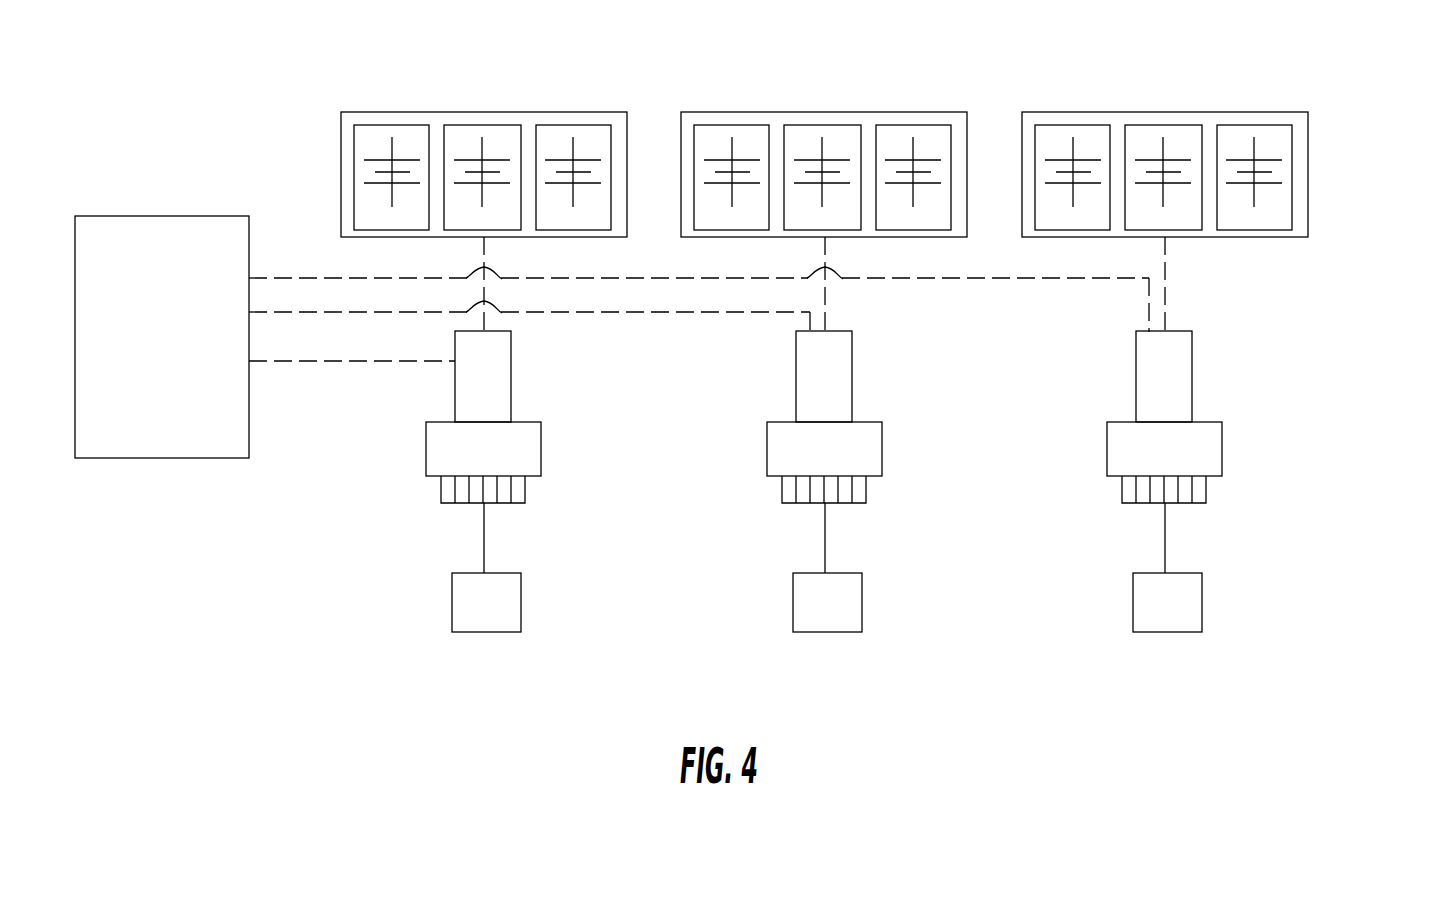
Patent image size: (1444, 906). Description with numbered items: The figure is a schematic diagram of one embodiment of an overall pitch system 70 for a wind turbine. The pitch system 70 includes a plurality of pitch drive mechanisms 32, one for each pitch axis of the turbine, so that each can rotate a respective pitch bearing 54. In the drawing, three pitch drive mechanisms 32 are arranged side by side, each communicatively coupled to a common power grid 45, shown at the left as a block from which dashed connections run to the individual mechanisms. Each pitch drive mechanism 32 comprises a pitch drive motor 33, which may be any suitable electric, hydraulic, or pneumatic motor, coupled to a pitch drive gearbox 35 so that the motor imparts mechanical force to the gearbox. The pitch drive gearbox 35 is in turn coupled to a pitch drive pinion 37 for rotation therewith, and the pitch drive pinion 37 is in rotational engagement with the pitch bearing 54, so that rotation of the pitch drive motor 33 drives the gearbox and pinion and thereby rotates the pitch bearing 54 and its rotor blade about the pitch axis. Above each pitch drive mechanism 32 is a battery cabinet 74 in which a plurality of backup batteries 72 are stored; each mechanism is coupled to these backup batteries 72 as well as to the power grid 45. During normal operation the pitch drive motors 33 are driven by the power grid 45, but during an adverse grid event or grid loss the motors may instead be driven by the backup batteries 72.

The pitch system 70 is at (1382, 168).
The backup battery 72 is at (459, 137).
The battery cabinet 74 is at (495, 112).
The power grid 45 is at (152, 382).
The pitch drive mechanism 32 is at (840, 425).
The pitch drive motor 33 is at (455, 377).
The pitch drive gearbox 35 is at (426, 445).
The pitch drive pinion 37 is at (450, 489).
The pitch bearing 54 is at (474, 617).